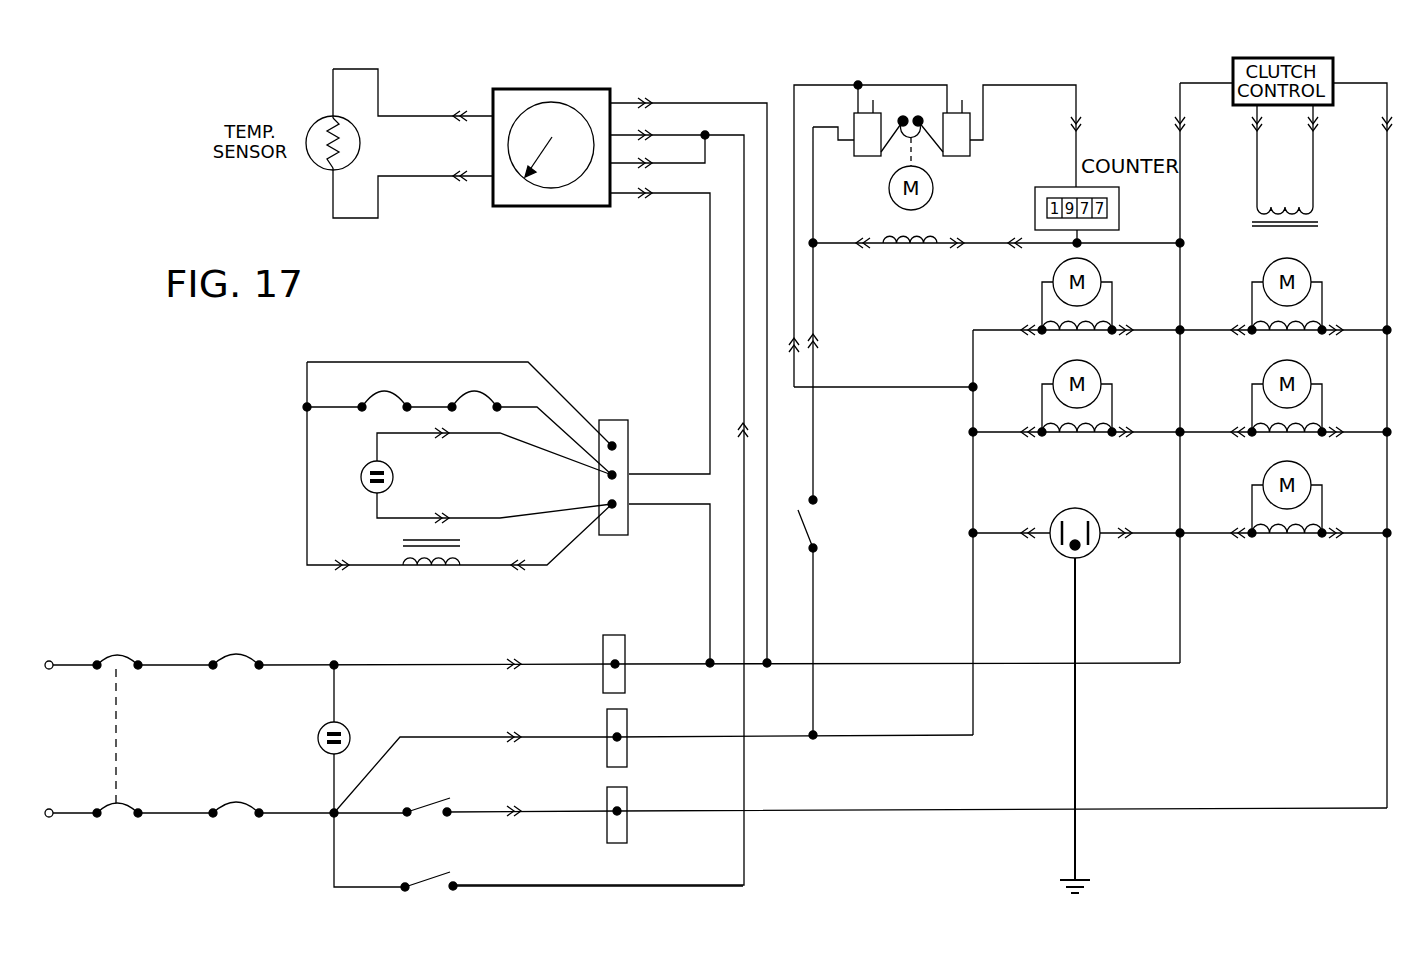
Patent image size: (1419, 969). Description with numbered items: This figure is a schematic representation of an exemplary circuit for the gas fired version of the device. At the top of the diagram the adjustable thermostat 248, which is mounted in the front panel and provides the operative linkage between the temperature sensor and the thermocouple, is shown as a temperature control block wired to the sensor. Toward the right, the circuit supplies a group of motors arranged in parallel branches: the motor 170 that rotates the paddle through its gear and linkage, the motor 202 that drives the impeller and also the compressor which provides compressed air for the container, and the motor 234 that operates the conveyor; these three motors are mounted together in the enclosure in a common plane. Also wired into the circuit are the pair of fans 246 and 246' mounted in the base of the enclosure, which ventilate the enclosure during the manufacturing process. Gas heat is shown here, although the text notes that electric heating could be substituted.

The adjustable thermostat 248 is at (556, 182).
The fan 246 is at (1057, 296).
The fan 246' is at (1061, 398).
The motor 170 is at (1310, 268).
The motor 234 is at (1265, 371).
The motor 202 is at (1264, 474).